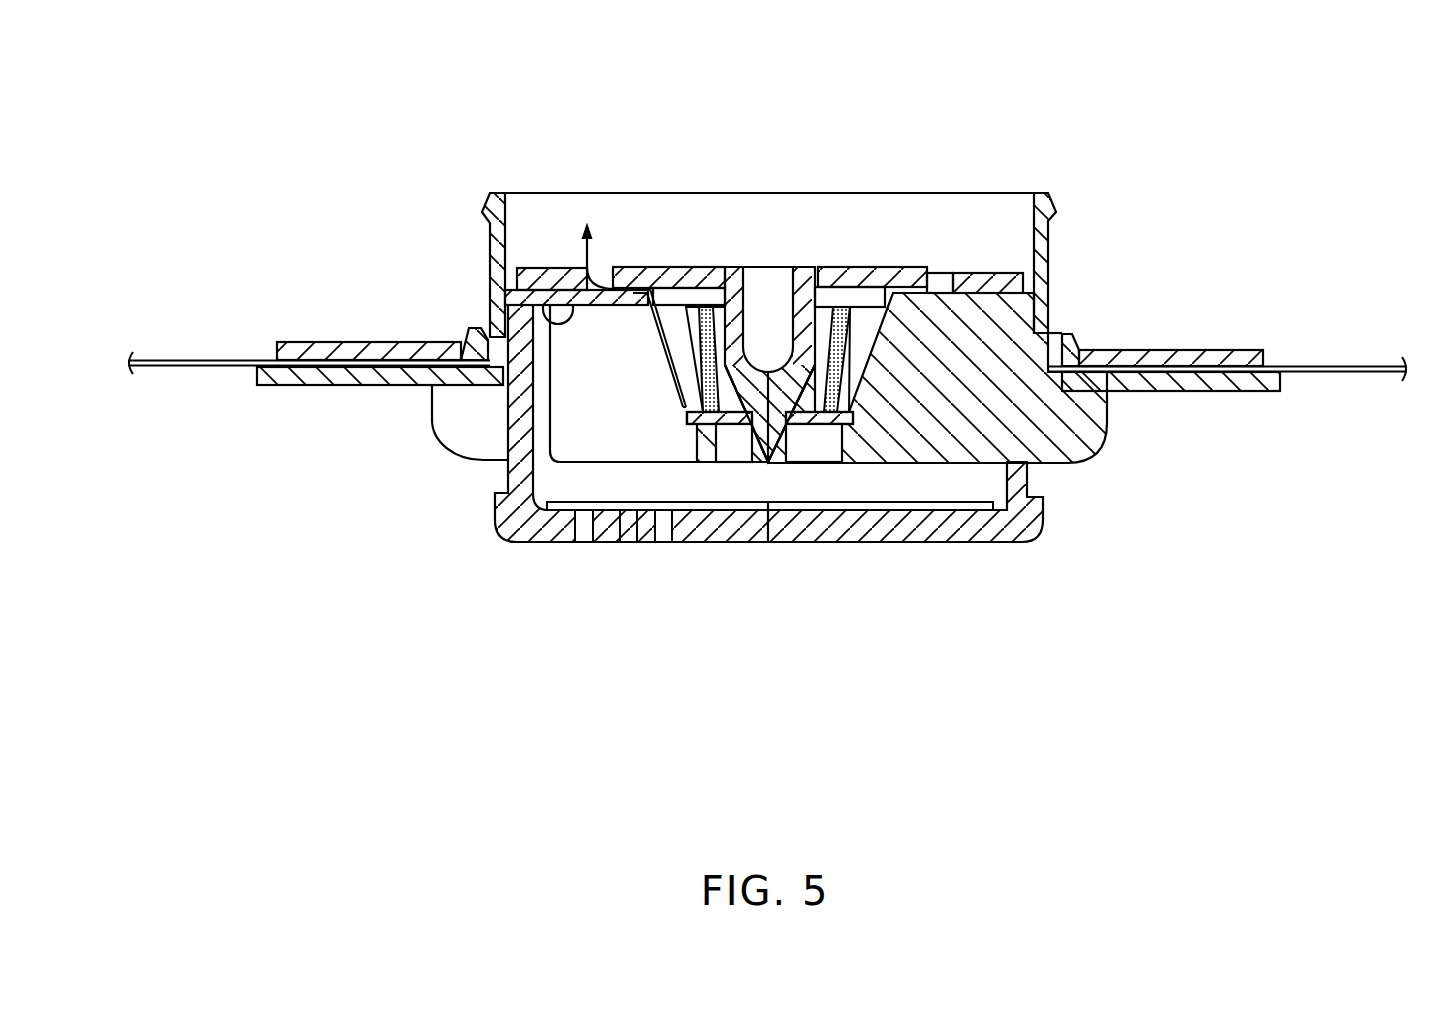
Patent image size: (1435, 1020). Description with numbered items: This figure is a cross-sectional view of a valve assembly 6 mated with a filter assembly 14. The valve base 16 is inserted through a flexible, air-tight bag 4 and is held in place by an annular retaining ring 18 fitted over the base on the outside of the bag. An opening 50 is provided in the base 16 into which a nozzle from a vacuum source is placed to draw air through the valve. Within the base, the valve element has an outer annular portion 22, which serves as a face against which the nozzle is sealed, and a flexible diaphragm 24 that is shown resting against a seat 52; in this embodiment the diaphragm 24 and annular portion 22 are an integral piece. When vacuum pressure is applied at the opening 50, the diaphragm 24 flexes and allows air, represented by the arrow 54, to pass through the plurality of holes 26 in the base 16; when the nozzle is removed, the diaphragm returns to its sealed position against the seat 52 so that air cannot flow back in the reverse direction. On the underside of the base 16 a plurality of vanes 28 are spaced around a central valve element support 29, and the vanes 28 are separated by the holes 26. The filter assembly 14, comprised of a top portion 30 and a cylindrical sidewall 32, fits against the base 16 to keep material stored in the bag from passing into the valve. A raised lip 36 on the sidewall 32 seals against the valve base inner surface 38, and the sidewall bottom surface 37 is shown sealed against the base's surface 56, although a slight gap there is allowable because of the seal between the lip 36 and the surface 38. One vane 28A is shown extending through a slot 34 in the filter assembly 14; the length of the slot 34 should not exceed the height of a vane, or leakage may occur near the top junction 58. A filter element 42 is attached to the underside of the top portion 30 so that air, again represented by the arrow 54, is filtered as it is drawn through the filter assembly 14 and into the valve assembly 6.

The bag 4 is at (156, 363).
The valve assembly 6 is at (767, 382).
The filter assembly 14 is at (745, 630).
The base 16 is at (1195, 385).
The retaining ring 18 is at (1207, 350).
The annular portion 22 is at (998, 272).
The diaphragm 24 is at (680, 267).
The holes 26 is at (852, 388).
The vanes 28 is at (1047, 428).
The vane 28A is at (455, 423).
The valve element support 29 is at (817, 415).
The top portion 30 is at (910, 535).
The sidewall 32 is at (515, 477).
The slot 34 is at (553, 405).
The lip 36 is at (503, 303).
The sidewall bottom surface 37 is at (512, 291).
The inner surface 38 is at (470, 329).
The filter element 42 is at (660, 533).
The opening 50 is at (799, 142).
The seat 52 is at (652, 297).
The arrow 54 is at (668, 370).
The surface 56 is at (545, 305).
The top junction 58 is at (533, 473).